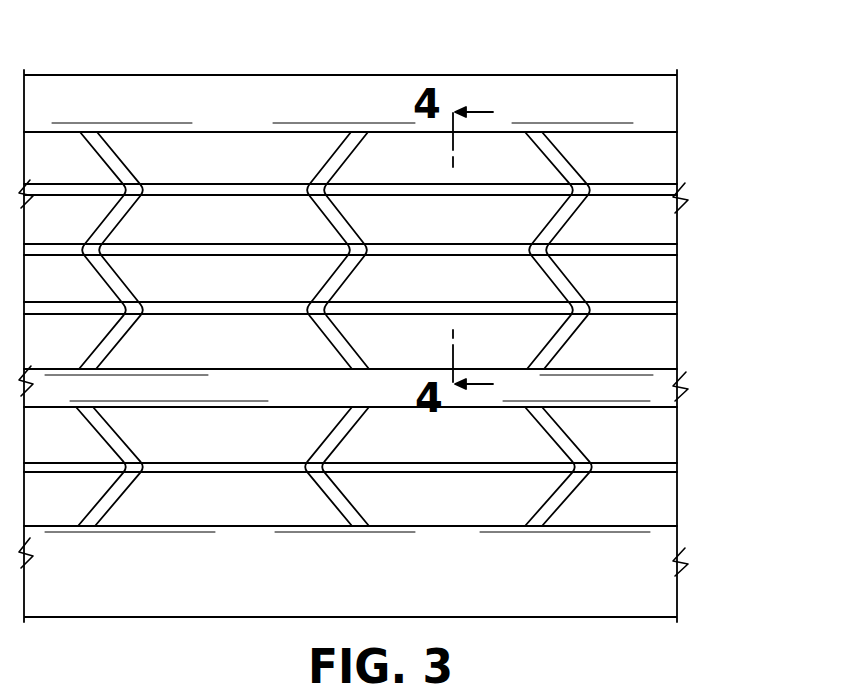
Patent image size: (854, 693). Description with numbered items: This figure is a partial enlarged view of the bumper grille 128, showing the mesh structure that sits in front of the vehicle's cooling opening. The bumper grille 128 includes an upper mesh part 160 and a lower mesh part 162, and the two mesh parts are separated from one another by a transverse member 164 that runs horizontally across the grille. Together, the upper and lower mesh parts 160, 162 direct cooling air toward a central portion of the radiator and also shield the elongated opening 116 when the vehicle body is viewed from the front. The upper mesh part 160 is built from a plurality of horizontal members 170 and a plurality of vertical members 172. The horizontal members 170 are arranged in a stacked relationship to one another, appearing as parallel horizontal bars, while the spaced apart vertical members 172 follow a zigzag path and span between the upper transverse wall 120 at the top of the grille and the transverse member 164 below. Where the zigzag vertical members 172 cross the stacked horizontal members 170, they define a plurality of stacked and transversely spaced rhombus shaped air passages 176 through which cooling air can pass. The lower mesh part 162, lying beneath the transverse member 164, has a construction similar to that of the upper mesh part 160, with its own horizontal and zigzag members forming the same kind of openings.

The elongated opening 116 is at (218, 143).
The upper transverse wall 120 is at (563, 120).
The bumper grille 128 is at (670, 158).
The upper mesh part 160 is at (652, 273).
The lower mesh part 162 is at (652, 447).
The transverse member 164 is at (623, 378).
The horizontal members 170 is at (190, 307).
The vertical members 172 is at (127, 143).
The rhombus shaped air passages 176 is at (518, 282).